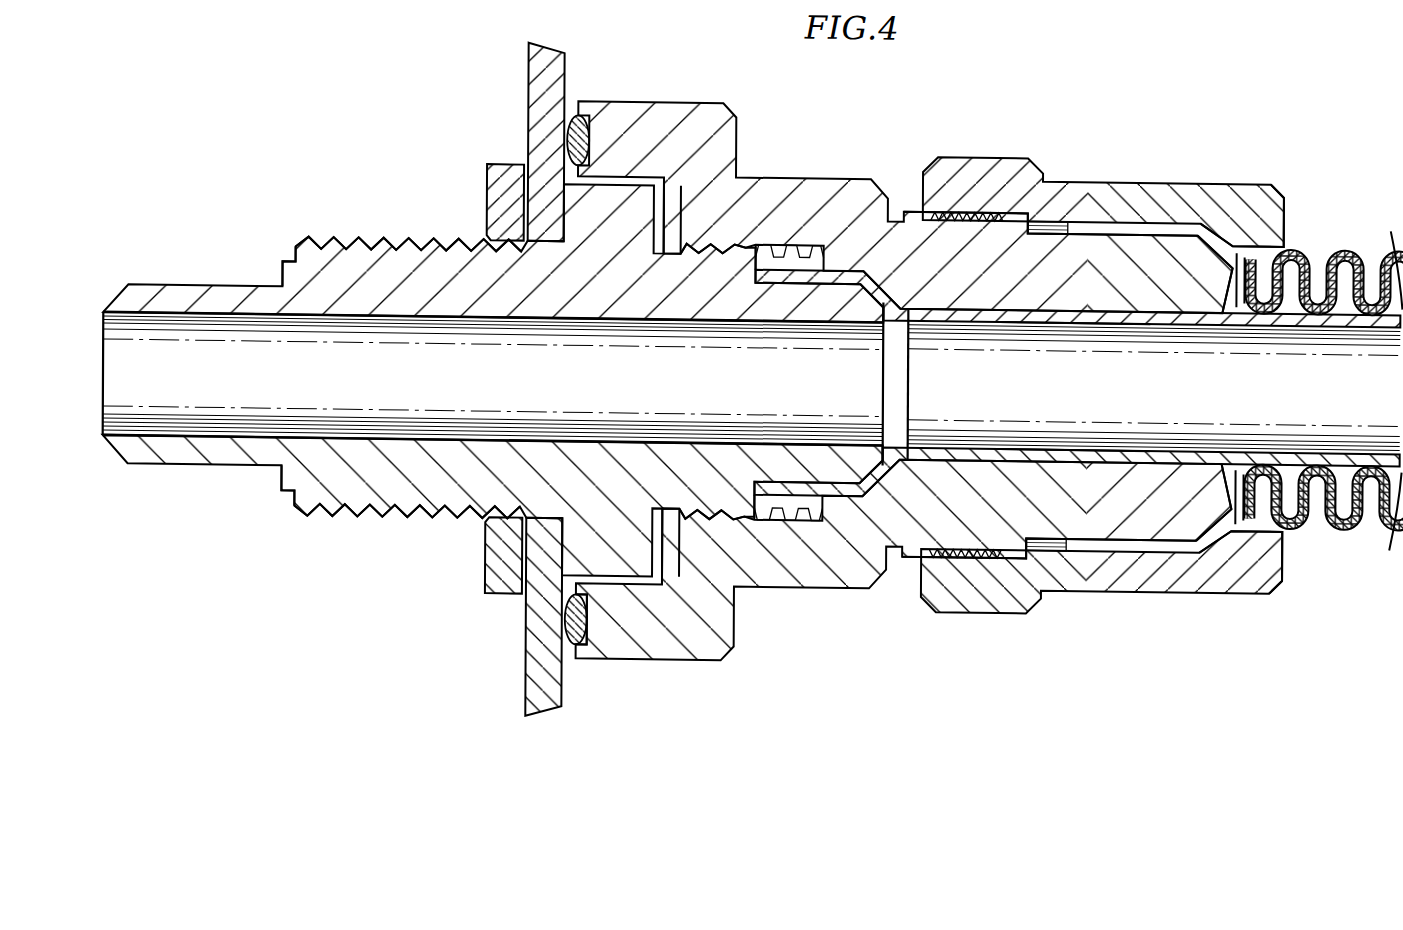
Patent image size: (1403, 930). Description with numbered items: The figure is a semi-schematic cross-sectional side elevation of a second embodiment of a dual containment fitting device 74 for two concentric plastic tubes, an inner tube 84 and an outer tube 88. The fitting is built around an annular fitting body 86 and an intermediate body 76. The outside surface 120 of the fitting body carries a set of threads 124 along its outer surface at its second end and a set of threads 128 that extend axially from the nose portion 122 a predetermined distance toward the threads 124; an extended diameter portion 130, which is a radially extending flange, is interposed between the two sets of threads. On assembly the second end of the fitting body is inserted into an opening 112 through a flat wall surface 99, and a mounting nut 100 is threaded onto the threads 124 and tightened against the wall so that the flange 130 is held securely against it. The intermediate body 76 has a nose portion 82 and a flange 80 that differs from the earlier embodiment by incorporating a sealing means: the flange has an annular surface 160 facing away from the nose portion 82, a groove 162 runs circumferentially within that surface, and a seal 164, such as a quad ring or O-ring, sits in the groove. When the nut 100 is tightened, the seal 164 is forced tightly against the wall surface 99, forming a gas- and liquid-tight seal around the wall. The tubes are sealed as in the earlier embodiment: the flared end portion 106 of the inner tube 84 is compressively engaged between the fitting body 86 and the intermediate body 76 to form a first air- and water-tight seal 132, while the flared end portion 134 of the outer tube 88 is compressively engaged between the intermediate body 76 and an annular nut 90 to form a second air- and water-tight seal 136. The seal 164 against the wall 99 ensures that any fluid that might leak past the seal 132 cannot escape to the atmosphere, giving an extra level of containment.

The fitting device 74 is at (478, 91).
The intermediate body 76 is at (1037, 275).
The flange 80 is at (680, 102).
The intermediate body nose portion 82 is at (1173, 282).
The inner tube 84 is at (1068, 329).
The annular fitting body 86 is at (704, 304).
The outer tube 88 is at (1357, 244).
The annular nut 90 is at (1149, 170).
The flat wall surface 99 is at (573, 74).
The mounting nut 100 is at (483, 197).
The flared end portion of the inner tube 106 is at (899, 336).
The opening 112 is at (550, 265).
The outside surface 120 is at (406, 255).
The nose portion 122 is at (810, 302).
The set of threads 124 is at (320, 255).
The set of threads 128 is at (760, 246).
The extended diameter portion 130 is at (632, 538).
The first air- and water-tight seal 132 is at (872, 315).
The flared end portion of the outer tube 134 is at (1207, 213).
The second air- and water-tight seal 136 is at (1197, 226).
The annular surface 160 is at (571, 105).
The groove 162 is at (568, 659).
The seal 164 is at (599, 622).